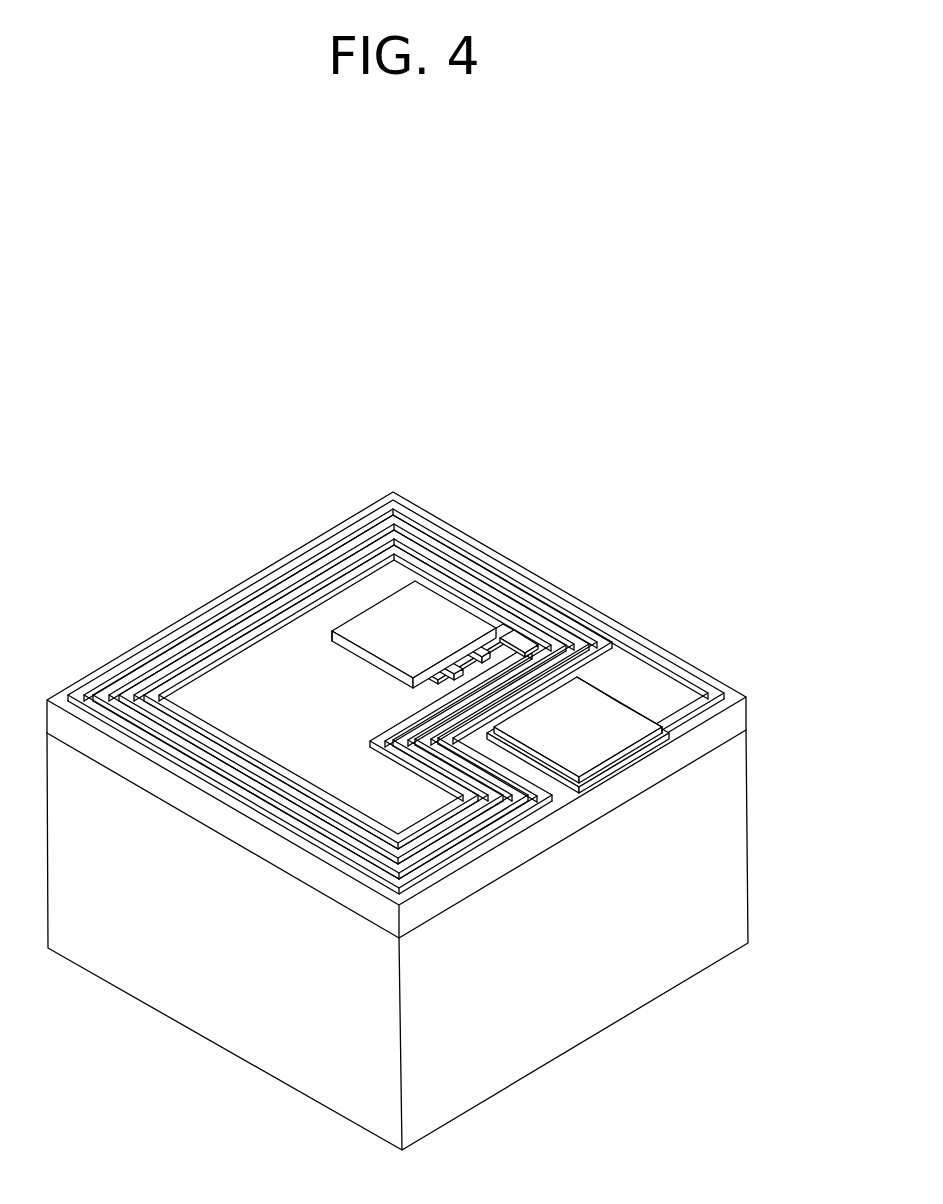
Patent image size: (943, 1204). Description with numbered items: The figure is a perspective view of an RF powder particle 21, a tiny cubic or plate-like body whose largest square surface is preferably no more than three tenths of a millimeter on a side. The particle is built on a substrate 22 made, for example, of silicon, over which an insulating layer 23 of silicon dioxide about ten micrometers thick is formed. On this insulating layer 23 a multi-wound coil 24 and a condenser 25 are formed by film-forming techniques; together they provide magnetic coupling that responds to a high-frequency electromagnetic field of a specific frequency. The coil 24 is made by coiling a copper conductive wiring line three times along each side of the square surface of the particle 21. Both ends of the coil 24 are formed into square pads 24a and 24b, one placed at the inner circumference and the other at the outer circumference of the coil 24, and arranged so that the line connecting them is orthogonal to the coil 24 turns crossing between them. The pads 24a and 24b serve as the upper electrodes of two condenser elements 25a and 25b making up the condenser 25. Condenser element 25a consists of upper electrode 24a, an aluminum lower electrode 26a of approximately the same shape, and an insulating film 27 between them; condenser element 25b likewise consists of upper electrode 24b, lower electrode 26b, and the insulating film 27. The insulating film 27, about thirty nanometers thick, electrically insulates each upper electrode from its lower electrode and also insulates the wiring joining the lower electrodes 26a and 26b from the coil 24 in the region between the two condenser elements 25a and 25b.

The RF powder particle 21 is at (724, 661).
The substrate 22 is at (735, 852).
The insulating layer 23 is at (747, 715).
The coil 24 is at (492, 548).
The pad 24a is at (418, 617).
The pad 24b is at (593, 742).
The condenser 25 is at (625, 680).
The condenser element 25a is at (356, 608).
The condenser element 25b is at (637, 698).
The lower electrode 26a is at (363, 668).
The lower electrode 26b is at (567, 778).
The insulating film 27 is at (620, 688).